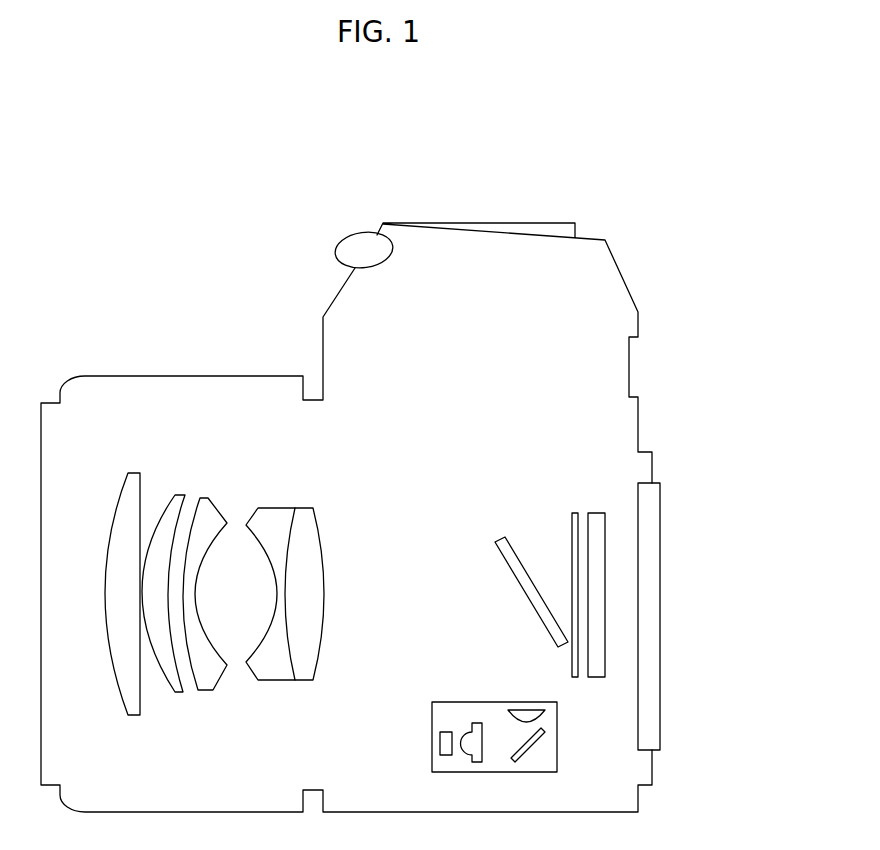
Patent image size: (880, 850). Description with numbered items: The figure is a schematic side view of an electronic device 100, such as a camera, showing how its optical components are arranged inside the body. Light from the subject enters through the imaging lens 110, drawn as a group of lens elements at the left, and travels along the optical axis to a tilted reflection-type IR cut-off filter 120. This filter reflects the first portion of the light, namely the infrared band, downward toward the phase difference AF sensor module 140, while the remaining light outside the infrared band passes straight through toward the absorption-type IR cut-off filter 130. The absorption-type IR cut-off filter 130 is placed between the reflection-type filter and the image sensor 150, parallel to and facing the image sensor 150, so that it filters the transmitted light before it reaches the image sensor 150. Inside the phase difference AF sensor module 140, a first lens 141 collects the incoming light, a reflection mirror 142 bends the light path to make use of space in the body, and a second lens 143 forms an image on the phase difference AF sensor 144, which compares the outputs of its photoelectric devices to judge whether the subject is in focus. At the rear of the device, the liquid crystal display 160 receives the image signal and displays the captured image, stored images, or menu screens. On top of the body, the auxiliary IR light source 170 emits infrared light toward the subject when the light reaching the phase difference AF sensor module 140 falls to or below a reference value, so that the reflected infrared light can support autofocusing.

The electronic device 100 is at (616, 204).
The imaging lens 110 is at (220, 476).
The reflection-type IR cut-off filter 120 is at (503, 538).
The absorption-type IR cut-off filter 130 is at (573, 515).
The phase difference AF sensor module 140 is at (432, 727).
The first lens 141 is at (540, 713).
The reflection mirror 142 is at (533, 743).
The second lens 143 is at (478, 760).
The phase difference AF sensor 144 is at (438, 748).
The image sensor 150 is at (598, 517).
The liquid crystal display 160 is at (660, 512).
The auxiliary IR light source 170 is at (357, 237).